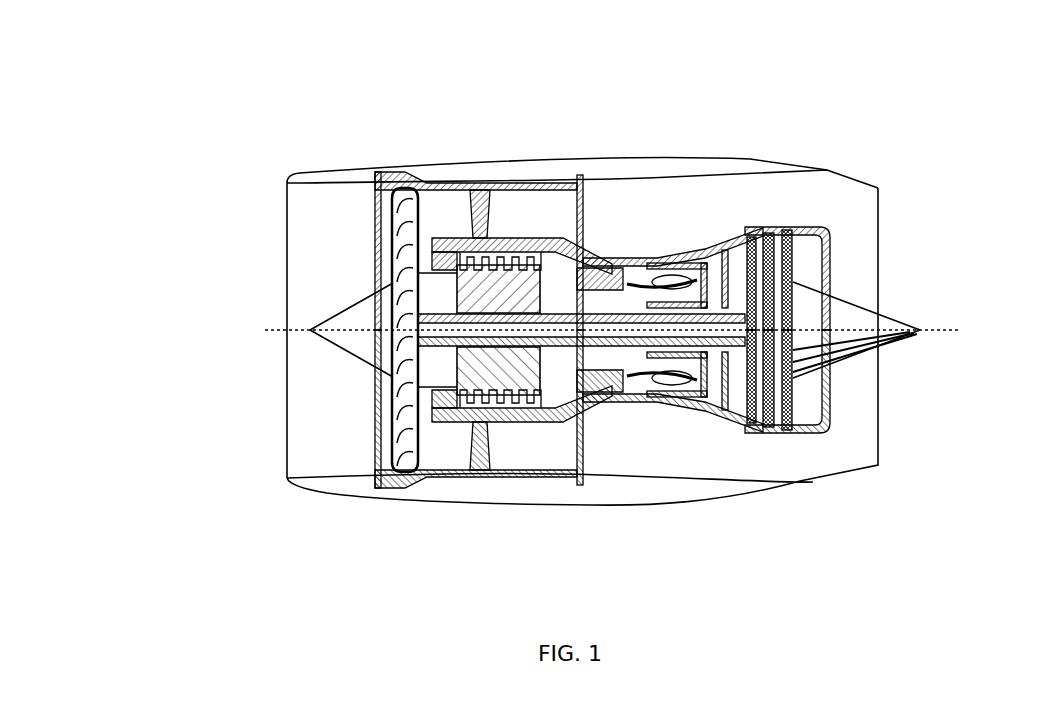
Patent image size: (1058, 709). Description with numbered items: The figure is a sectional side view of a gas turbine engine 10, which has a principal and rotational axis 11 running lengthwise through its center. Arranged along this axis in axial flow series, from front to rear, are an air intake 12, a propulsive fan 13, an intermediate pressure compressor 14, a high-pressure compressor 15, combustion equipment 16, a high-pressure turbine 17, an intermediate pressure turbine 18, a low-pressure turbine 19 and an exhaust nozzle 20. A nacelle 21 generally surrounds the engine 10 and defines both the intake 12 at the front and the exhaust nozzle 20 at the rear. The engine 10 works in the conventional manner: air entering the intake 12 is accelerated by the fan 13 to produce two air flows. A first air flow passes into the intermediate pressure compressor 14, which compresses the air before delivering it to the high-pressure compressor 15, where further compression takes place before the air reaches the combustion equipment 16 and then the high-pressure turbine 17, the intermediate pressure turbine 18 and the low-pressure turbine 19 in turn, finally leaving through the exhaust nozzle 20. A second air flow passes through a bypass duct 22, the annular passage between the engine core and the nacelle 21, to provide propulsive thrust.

The gas turbine engine 10 is at (114, 174).
The principal and rotational axis 11 is at (265, 330).
The air intake 12 is at (329, 184).
The propulsive fan 13 is at (392, 447).
The intermediate pressure compressor 14 is at (500, 427).
The high-pressure compressor 15 is at (602, 278).
The combustion equipment 16 is at (665, 390).
The high-pressure turbine 17 is at (677, 395).
The intermediate pressure turbine 18 is at (723, 241).
The low-pressure turbine 19 is at (731, 413).
The exhaust nozzle 20 is at (882, 455).
The nacelle 21 is at (713, 153).
The bypass duct 22 is at (546, 225).